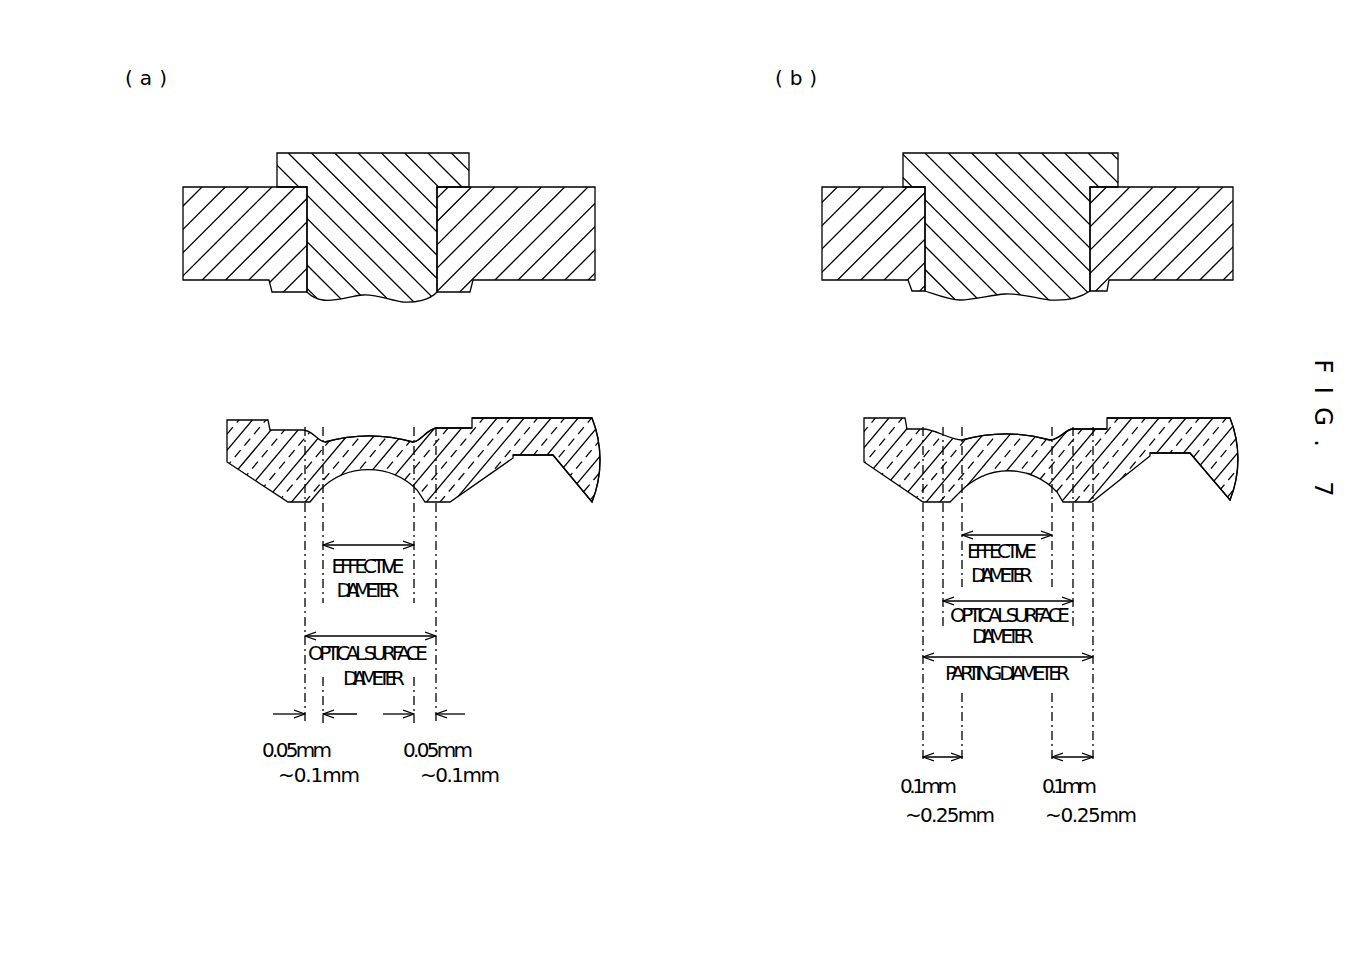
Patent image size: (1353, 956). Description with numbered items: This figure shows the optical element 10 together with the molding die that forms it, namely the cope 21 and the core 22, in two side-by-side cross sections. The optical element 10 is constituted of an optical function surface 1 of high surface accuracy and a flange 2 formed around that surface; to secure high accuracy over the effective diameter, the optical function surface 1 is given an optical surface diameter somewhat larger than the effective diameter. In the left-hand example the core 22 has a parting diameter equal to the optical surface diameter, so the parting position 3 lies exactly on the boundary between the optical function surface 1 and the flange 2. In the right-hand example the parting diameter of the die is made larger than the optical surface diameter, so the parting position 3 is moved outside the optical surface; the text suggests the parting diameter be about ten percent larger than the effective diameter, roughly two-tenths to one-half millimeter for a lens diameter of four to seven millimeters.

The optical function surface 1 is at (368, 440).
The flange 2 is at (542, 432).
The parting position 3 is at (440, 428).
The optical element 10 is at (203, 420).
The cope 21 is at (550, 202).
The core 22 is at (427, 170).